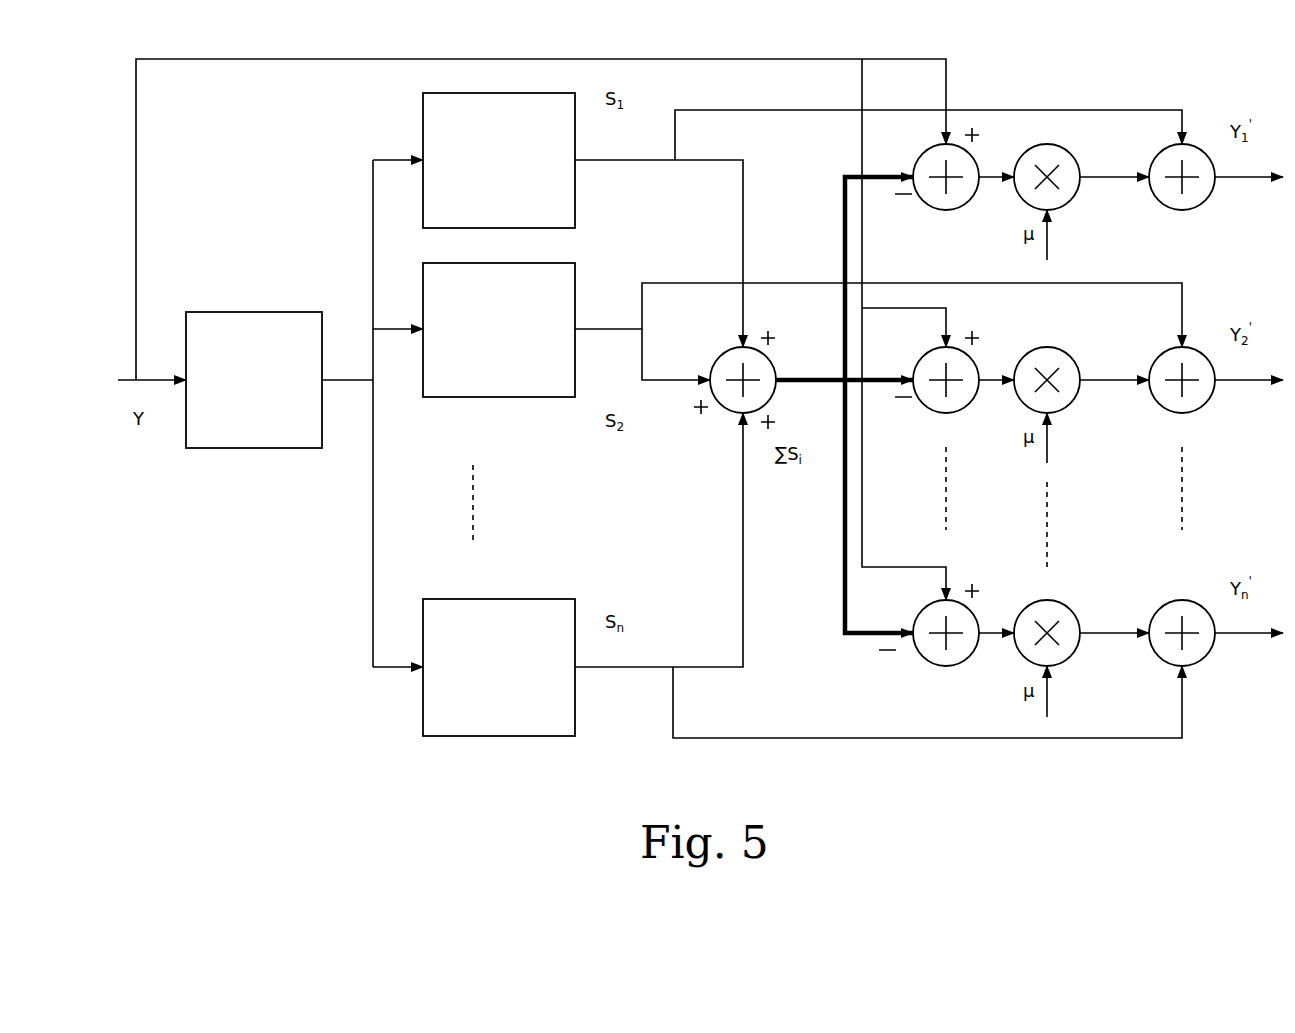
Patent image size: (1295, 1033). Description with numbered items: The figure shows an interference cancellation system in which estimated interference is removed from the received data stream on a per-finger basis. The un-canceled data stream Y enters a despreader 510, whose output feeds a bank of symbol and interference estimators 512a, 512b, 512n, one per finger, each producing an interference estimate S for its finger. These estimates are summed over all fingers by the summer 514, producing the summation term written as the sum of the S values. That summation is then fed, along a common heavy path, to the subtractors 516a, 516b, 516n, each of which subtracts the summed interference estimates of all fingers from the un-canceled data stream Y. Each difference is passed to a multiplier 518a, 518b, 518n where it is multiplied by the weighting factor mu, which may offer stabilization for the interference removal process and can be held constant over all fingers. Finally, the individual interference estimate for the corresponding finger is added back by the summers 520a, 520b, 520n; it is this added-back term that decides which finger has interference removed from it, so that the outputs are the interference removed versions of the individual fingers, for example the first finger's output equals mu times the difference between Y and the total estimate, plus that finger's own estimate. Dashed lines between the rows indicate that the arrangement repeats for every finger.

The DeSpreader 510 is at (203, 312).
The symbol and interference estimator 512a is at (423, 130).
The symbol and interference estimator 512b is at (525, 397).
The symbol and interference estimator 512n is at (423, 700).
The summer 514 is at (728, 413).
The subtractor 516a is at (928, 210).
The subtractor 516b is at (928, 413).
The subtractor 516n is at (928, 666).
The multiplier 518a is at (1080, 193).
The multiplier 518b is at (1080, 396).
The multiplier 518n is at (1080, 649).
The summer 520a is at (1215, 195).
The summer 520b is at (1215, 398).
The summer 520n is at (1215, 651).